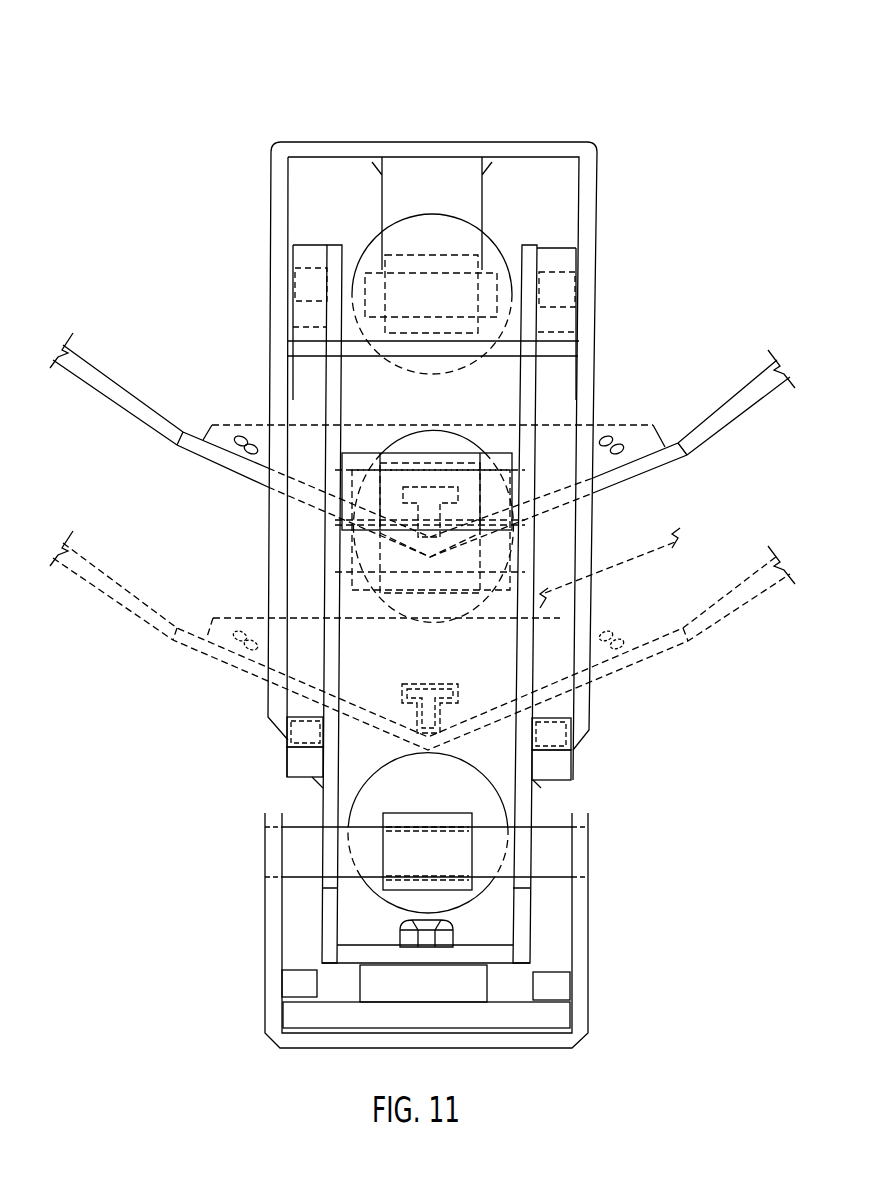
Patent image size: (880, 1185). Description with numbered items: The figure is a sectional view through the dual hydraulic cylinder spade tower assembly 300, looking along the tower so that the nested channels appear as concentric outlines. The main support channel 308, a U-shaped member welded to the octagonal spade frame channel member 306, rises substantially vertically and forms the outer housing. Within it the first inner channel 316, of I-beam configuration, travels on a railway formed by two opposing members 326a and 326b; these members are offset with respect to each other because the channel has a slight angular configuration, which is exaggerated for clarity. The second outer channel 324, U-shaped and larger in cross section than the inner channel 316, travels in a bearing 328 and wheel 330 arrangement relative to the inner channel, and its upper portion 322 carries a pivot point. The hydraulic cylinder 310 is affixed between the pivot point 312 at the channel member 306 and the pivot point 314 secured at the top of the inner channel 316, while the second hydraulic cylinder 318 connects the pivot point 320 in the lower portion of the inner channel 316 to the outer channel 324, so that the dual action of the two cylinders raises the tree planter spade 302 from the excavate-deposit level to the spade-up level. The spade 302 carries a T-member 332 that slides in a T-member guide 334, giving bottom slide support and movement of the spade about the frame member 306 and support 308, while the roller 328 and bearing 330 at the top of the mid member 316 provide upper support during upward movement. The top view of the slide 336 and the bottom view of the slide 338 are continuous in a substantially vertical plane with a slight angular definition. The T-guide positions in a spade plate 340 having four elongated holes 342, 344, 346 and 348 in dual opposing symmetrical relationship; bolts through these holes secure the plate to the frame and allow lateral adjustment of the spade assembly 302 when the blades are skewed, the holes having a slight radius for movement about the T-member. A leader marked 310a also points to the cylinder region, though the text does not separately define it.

The dual hydraulic cylinder spade tower assembly 300 is at (610, 90).
The tree planter spade 302 is at (660, 467).
The spade frame channel member 306 is at (640, 560).
The main support channel 308 is at (271, 243).
The hydraulic cylinder 310 is at (482, 238).
The roller block 310a is at (487, 490).
The pivot point 312 is at (488, 273).
The pivot point 314 is at (398, 508).
The first inner channel 316 is at (320, 622).
The second hydraulic cylinder 318 is at (450, 433).
The pivot point 320 is at (423, 580).
The upper portion of outer channel 322 is at (383, 858).
The second outer channel 324 is at (270, 957).
The railway member 326a is at (307, 290).
The railway member 326b is at (565, 297).
The bearing 328 is at (443, 993).
The wheel 330 is at (562, 1022).
The T-member 332 is at (442, 692).
The T-member guide 334 is at (415, 682).
The slide (top view) 336 is at (652, 652).
The slide (bottom view) 338 is at (609, 230).
The spade plate 340 is at (660, 633).
The elongated hole 342 is at (615, 638).
The elongated hole 344 is at (607, 628).
The elongated hole 346 is at (235, 638).
The elongated hole 348 is at (232, 637).